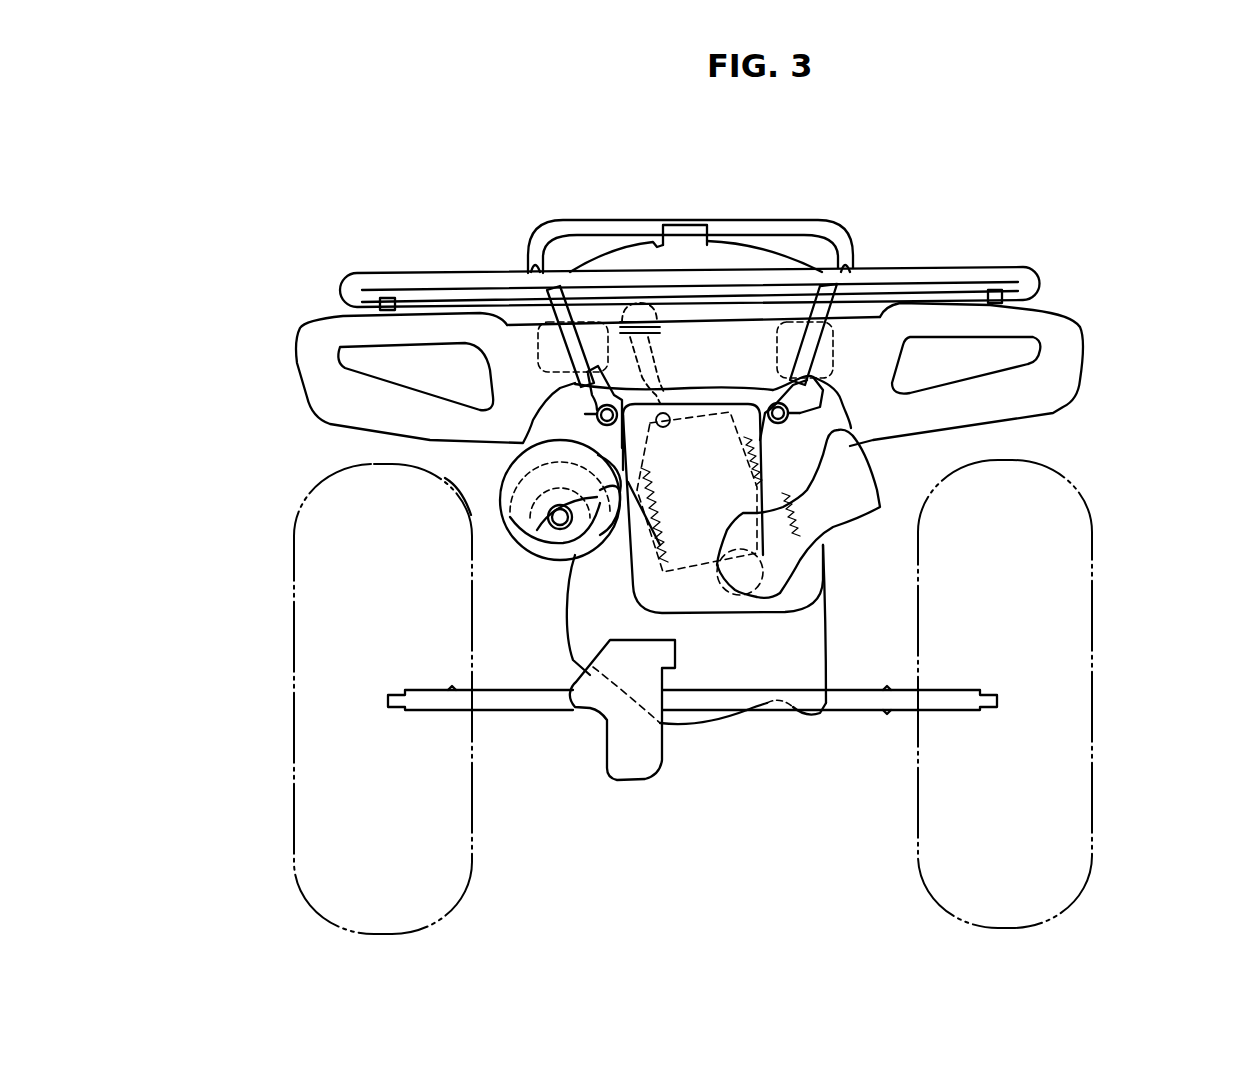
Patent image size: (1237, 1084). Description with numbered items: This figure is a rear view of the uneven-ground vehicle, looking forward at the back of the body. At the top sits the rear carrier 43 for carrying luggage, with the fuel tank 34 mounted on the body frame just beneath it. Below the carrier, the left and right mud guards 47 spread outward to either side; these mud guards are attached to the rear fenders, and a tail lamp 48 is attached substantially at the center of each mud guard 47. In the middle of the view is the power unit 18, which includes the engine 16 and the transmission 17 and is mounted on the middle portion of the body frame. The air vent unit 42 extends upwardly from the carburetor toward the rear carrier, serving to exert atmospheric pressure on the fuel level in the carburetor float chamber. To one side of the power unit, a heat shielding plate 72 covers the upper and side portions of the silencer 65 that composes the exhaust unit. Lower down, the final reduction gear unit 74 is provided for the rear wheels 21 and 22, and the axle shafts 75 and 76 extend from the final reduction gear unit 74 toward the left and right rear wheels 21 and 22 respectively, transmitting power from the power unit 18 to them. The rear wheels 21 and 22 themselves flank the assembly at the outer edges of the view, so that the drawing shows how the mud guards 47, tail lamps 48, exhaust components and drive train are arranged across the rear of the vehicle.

The engine 16 is at (823, 540).
The transmission 17 is at (685, 727).
The power unit 18 is at (753, 723).
The rear wheel 21 is at (295, 588).
The rear wheel 22 is at (1092, 568).
The fuel tank 34 is at (562, 233).
The air vent unit 42 is at (657, 368).
The rear carrier 43 is at (948, 268).
The mud guard 47 is at (300, 328).
The tail lamp 48 is at (338, 358).
The silencer 65 is at (533, 560).
The heat shielding plate 72 is at (500, 476).
The final reduction gear unit 74 is at (603, 768).
The axle shaft 75 is at (515, 713).
The axle shaft 76 is at (860, 713).